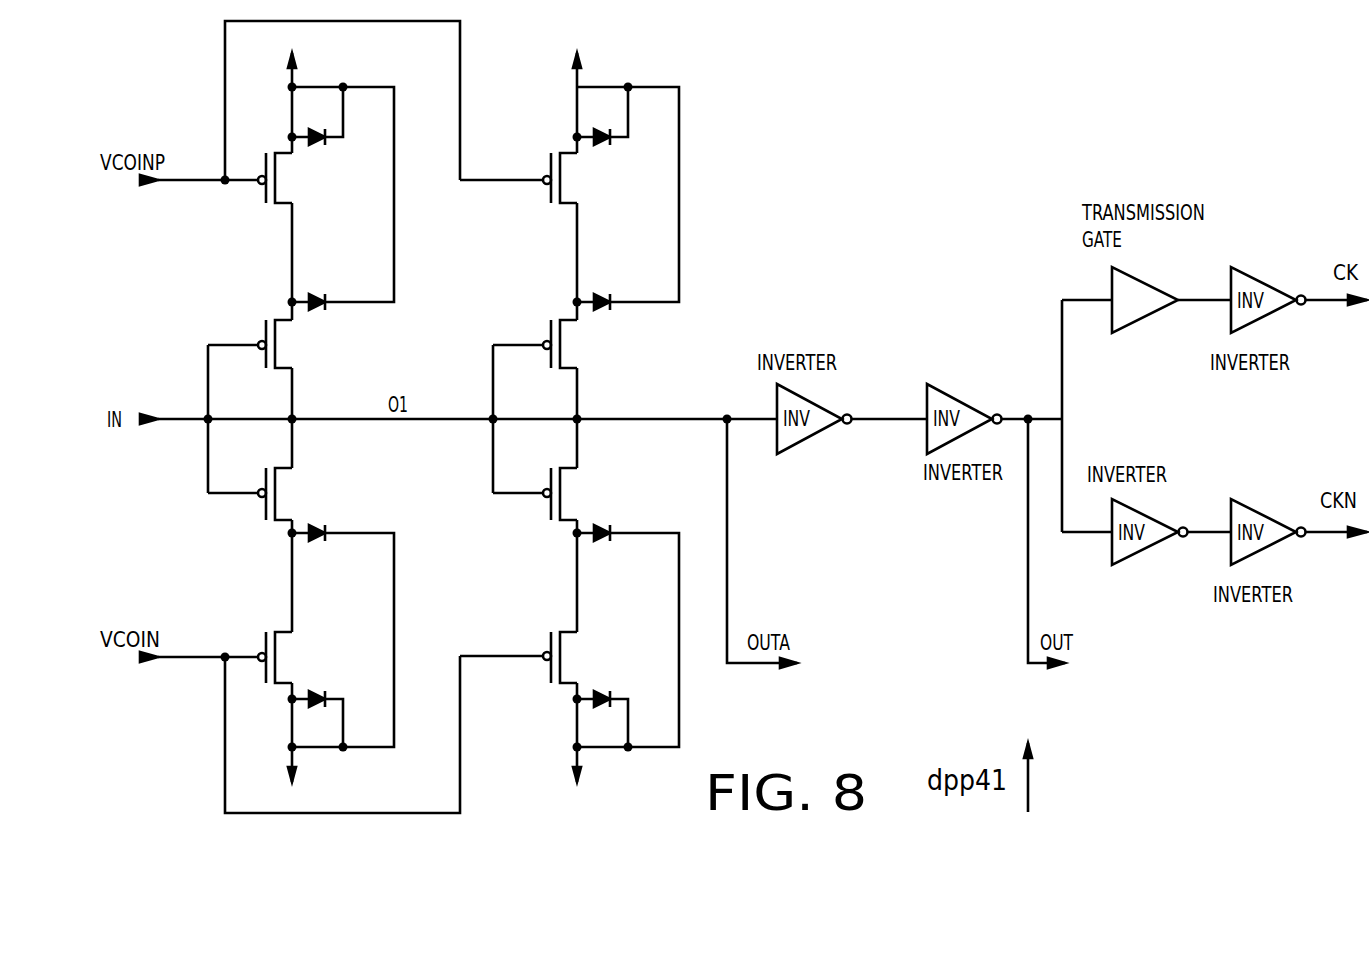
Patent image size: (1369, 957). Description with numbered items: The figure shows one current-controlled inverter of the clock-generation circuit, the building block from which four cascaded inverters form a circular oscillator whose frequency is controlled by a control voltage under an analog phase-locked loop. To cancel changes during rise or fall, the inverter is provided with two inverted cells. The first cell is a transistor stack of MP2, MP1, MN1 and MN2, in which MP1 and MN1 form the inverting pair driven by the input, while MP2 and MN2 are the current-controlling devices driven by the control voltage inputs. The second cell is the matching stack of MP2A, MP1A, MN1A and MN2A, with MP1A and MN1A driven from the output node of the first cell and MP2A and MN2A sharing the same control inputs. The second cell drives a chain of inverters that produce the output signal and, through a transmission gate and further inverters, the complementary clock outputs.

The PMOS transistor MP2 is at (261, 154).
The PMOS transistor MP1 is at (286, 320).
The NMOS transistor MN1 is at (288, 485).
The NMOS transistor MN2 is at (270, 645).
The PMOS transistor MP2A is at (556, 155).
The PMOS transistor MP1A is at (576, 320).
The NMOS transistor MN1A is at (576, 478).
The NMOS transistor MN2A is at (564, 641).